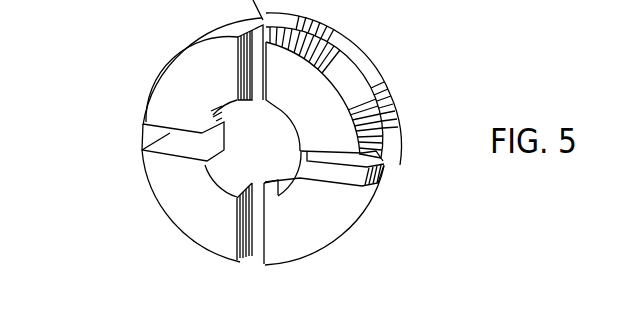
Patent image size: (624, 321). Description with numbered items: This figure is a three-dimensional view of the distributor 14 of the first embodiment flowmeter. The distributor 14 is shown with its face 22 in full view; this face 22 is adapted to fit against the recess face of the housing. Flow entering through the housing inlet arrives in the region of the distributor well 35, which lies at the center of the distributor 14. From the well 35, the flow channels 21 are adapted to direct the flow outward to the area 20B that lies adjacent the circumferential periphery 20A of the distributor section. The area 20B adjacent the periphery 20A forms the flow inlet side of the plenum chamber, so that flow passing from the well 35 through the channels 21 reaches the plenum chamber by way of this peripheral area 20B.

The distributor 14 is at (167, 60).
The circumferential periphery 20A is at (359, 53).
The area adjacent circumferential periphery 20B is at (430, 95).
The flow channels 21 is at (170, 145).
The face 22 is at (313, 227).
The distributor well 35 is at (237, 150).